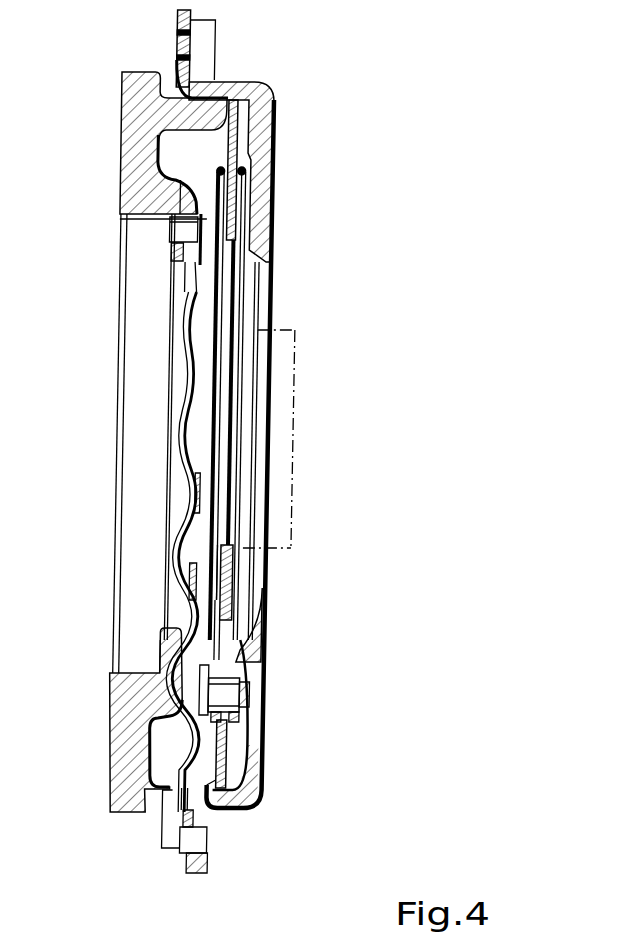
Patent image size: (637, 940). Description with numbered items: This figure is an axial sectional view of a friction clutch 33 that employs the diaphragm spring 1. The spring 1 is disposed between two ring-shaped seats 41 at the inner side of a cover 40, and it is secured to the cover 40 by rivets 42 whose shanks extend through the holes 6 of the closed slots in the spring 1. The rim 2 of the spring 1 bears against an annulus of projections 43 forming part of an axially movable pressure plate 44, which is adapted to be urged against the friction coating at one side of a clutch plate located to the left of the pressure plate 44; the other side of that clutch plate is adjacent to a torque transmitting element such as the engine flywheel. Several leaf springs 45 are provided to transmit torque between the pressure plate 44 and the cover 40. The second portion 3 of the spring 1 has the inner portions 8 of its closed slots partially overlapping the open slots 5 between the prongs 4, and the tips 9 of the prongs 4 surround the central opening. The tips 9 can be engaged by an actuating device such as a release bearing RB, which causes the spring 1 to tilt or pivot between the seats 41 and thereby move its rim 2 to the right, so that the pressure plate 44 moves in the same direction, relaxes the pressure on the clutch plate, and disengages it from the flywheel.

The diaphragm spring 1 is at (226, 143).
The rim 2 is at (236, 146).
The second portion 3 is at (216, 553).
The prongs 4 is at (234, 560).
The open slots 5 is at (230, 283).
The holes 6 is at (242, 673).
The inner portions 8 is at (226, 638).
The tips 9 is at (233, 543).
The friction clutch 33 is at (275, 234).
The cover 40 is at (268, 118).
The ring-shaped seats 41 is at (252, 727).
The rivets 42 is at (232, 693).
The projections 43 is at (215, 115).
The pressure plate 44 is at (137, 131).
The leaf springs 45 is at (183, 731).
The release bearing RB is at (299, 397).